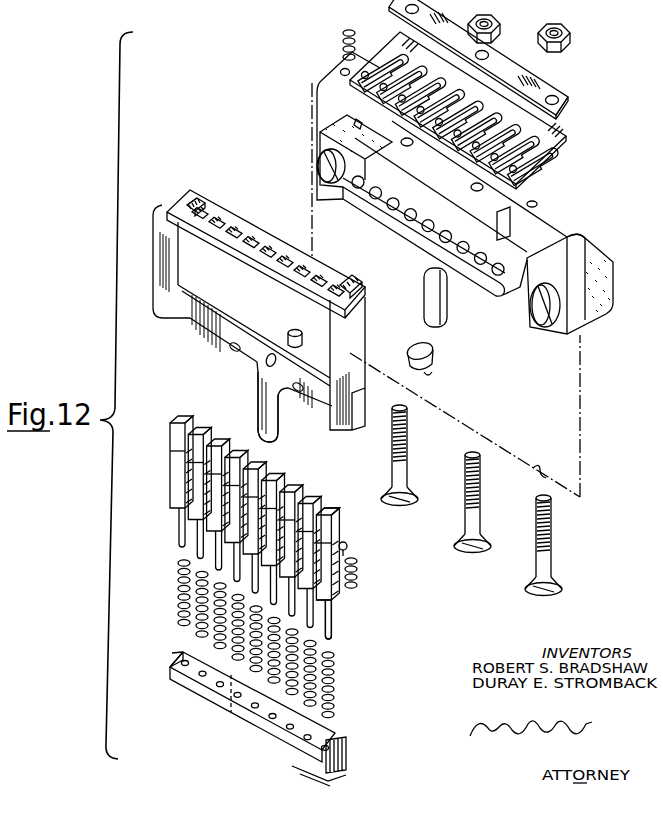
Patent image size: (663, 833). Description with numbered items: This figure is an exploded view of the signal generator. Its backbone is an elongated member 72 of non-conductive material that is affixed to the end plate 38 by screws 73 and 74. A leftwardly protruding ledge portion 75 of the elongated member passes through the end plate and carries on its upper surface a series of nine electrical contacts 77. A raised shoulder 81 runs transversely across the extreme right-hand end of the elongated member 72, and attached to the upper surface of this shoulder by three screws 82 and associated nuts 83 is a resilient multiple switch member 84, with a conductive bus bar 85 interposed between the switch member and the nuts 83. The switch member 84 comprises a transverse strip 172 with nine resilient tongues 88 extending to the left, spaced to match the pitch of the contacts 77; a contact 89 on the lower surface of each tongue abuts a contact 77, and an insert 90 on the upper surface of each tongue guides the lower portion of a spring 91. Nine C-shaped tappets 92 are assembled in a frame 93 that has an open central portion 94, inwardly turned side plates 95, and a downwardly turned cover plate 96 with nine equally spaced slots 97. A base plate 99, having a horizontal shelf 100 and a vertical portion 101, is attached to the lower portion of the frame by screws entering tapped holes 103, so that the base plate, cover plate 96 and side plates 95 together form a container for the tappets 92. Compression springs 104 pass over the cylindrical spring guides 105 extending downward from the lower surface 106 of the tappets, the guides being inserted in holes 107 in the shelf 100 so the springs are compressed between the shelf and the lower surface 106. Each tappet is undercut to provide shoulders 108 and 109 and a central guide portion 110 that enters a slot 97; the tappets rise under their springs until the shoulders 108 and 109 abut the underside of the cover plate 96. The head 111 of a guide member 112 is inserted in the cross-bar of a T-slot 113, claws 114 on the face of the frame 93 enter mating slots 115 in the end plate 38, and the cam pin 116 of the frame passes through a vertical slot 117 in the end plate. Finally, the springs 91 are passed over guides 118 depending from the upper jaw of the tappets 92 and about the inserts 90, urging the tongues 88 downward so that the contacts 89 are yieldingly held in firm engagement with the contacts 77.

The end plate 38 is at (585, 390).
The elongated member 72 is at (461, 273).
The screw 73 is at (318, 168).
The screw 74 is at (535, 318).
The ledge portion 75 is at (393, 232).
The electrical contacts 77 is at (372, 205).
The raised shoulder 81 is at (575, 248).
The screws 82 is at (408, 447).
The nuts 83 is at (486, 15).
The multiple switch member 84 is at (582, 134).
The bus bar 85 is at (513, 70).
The resilient tongues 88 is at (518, 152).
The contacts 89 is at (505, 168).
The insert 90 is at (343, 70).
The spring 91 is at (352, 40).
The tappets 92 is at (254, 528).
The frame 93 is at (261, 288).
The open central portion 94 is at (246, 323).
The side plates 95 is at (160, 315).
The cover plate 96 is at (268, 240).
The slots 97 is at (200, 200).
The base plate 99 is at (256, 719).
The horizontal shelf 100 is at (185, 682).
The vertical portion 101 is at (310, 770).
The tapped holes 103 is at (230, 347).
The compression springs 104 is at (333, 683).
The spring guides 105 is at (335, 630).
The lower surface 106 is at (335, 593).
The holes 107 is at (333, 743).
The shoulder 108 is at (176, 452).
The shoulder 109 is at (342, 533).
The central guide portion 110 is at (321, 502).
The head 111 is at (431, 377).
The guide member 112 is at (440, 354).
The T-slot 113 is at (265, 406).
The claws 114 is at (243, 208).
The slots 115 is at (355, 122).
The cam pin 116 is at (293, 330).
The vertical slot 117 is at (441, 303).
The guides 118 is at (347, 547).
The transverse strip 172 is at (565, 110).